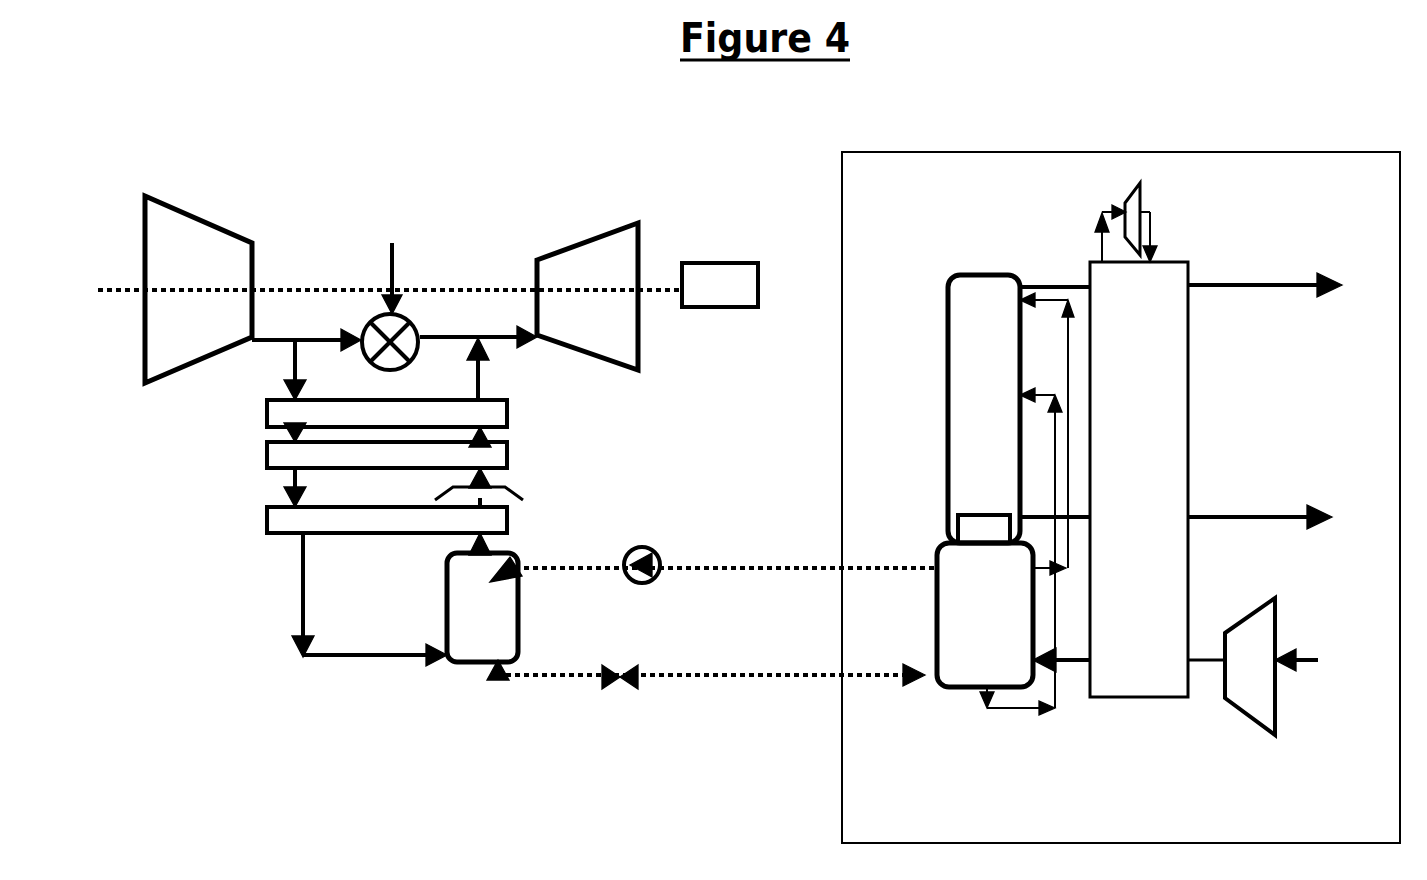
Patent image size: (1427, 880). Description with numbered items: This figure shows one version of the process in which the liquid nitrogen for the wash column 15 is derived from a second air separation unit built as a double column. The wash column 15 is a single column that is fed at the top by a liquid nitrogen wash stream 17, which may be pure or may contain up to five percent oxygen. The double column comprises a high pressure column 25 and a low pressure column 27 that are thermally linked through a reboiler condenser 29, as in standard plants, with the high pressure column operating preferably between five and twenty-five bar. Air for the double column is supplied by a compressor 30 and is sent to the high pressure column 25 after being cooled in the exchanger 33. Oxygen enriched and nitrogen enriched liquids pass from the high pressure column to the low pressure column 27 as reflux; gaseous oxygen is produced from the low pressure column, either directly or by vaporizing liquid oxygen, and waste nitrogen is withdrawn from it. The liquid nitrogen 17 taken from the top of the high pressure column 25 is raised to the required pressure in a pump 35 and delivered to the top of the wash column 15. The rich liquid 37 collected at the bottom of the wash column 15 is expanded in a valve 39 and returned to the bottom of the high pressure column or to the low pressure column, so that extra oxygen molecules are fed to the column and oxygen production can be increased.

The wash column 15 is at (482, 607).
The liquid nitrogen wash stream 17 is at (553, 563).
The high pressure column 25 is at (985, 615).
The low pressure column 27 is at (984, 409).
The reboiler condenser 29 is at (985, 532).
The compressor 30 is at (1253, 666).
The exchanger 33 is at (1139, 479).
The pump 35 is at (647, 550).
The rich liquid 37 is at (553, 680).
The valve 39 is at (625, 690).